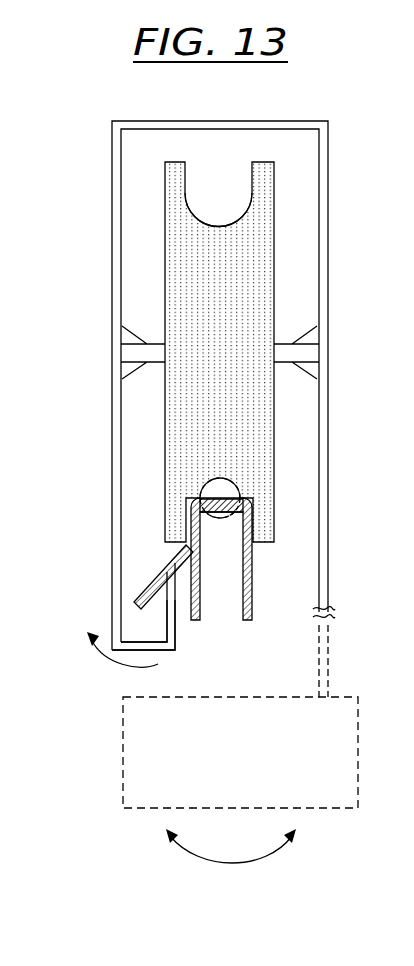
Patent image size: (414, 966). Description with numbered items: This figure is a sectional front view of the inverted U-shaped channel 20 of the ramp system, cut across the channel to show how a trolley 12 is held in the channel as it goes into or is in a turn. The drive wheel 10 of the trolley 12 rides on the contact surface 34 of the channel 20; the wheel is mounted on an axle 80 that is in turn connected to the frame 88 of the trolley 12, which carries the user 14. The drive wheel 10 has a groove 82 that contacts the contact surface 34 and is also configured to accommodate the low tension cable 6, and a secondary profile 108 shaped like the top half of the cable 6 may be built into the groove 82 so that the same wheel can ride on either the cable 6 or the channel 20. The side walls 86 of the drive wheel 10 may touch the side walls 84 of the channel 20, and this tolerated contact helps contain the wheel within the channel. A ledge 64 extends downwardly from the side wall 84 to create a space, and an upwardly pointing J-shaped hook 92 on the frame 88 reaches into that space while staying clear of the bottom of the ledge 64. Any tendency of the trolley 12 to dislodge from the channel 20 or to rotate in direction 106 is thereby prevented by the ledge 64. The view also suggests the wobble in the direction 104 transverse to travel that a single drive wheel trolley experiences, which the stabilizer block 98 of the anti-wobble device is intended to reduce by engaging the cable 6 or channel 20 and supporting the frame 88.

The frame 88 is at (152, 120).
The side walls 86 is at (165, 229).
The groove 82 is at (189, 198).
The stabilizer block 98 is at (210, 220).
The axle 80 is at (278, 343).
The drive wheel 10 is at (156, 406).
The secondary profile 108 is at (221, 478).
The contact surface 34 is at (234, 492).
The low tension cable 6 is at (212, 520).
The side wall 84 is at (250, 573).
The ledge 64 is at (174, 578).
The hook 92 is at (176, 630).
The inverted U-shaped channel 20 is at (276, 612).
The direction of rotation 106 is at (104, 660).
The trolley 12 is at (192, 752).
The user 14 is at (123, 741).
The direction transverse to travel 104 is at (260, 860).